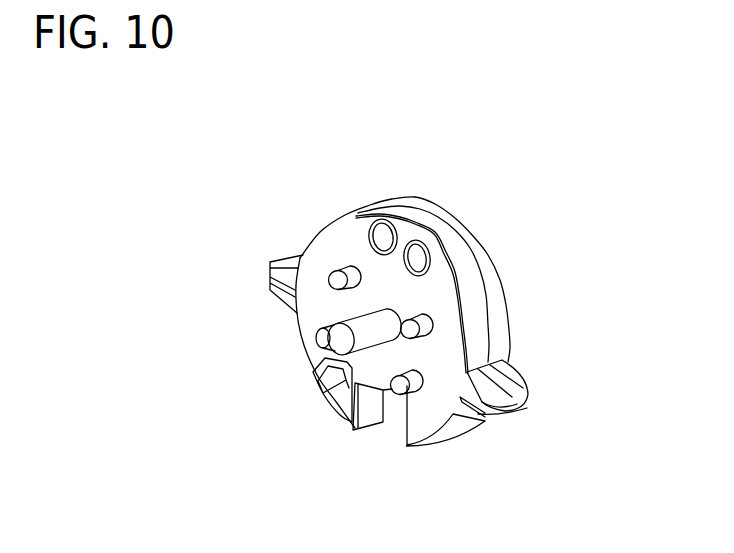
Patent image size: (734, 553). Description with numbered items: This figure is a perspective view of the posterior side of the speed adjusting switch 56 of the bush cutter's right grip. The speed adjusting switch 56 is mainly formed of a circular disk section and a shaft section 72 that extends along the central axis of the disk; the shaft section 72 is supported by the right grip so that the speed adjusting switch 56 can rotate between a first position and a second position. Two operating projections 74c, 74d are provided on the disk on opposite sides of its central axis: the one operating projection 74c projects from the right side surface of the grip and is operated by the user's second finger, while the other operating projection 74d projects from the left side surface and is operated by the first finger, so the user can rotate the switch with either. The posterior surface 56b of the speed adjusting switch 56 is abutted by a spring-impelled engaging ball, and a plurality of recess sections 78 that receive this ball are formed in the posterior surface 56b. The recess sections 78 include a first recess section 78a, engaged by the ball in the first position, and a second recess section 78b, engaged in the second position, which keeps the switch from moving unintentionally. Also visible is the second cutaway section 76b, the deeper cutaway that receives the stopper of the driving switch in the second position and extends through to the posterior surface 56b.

The speed adjusting switch 56 is at (396, 315).
The posterior surface 56b is at (443, 294).
The shaft section 72 is at (342, 339).
The operating projection 74c is at (518, 413).
The operating projection 74d is at (272, 262).
The second cutaway section 76b is at (378, 452).
The recess sections 78 is at (411, 187).
The first recess section 78a is at (418, 257).
The second recess section 78b is at (378, 233).